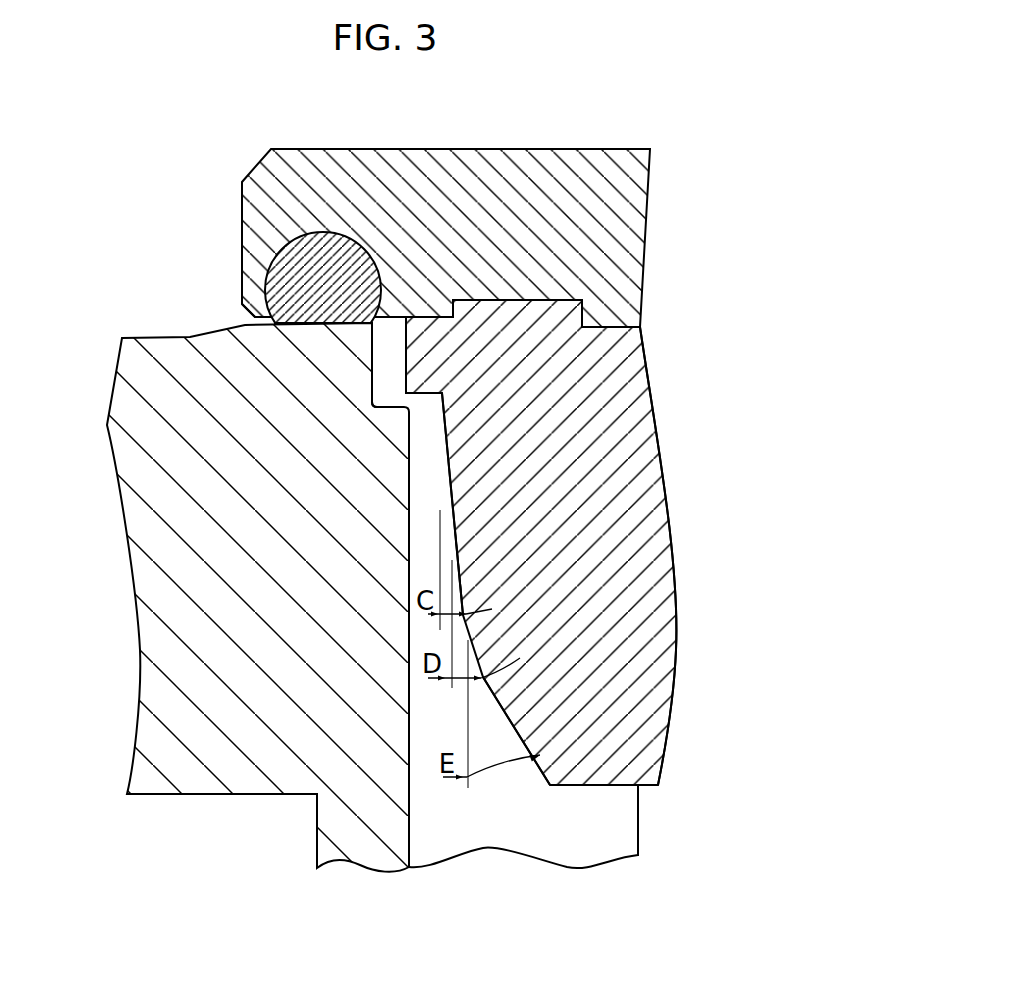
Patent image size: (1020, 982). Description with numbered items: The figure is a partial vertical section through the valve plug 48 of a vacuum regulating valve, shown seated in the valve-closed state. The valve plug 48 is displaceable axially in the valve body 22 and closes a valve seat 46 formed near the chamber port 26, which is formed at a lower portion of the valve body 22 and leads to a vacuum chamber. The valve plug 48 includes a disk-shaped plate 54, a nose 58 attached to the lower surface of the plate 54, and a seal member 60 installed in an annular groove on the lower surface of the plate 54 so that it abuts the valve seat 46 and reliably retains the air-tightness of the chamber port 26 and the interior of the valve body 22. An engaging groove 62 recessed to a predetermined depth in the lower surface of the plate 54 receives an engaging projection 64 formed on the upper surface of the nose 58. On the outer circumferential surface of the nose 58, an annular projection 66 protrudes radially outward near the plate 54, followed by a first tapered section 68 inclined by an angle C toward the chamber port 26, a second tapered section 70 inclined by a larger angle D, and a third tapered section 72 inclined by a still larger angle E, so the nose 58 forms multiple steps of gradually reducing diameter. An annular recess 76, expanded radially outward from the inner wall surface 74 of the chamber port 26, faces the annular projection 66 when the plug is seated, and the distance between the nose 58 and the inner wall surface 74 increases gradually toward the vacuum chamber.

The valve body 22 is at (251, 798).
The chamber port 26 is at (571, 833).
The valve seat 46 is at (268, 299).
The valve plug 48 is at (643, 348).
The disk-shaped plate 54 is at (625, 247).
The nose 58 is at (665, 556).
The seal member 60 is at (314, 283).
The engaging groove 62 is at (541, 306).
The engaging projection 64 is at (510, 302).
The annular projection 66 is at (424, 348).
The first tapered section 68 is at (448, 520).
The second tapered section 70 is at (452, 590).
The third tapered section 72 is at (500, 703).
The inner wall surface 74 is at (413, 818).
The annular recess 76 is at (378, 365).